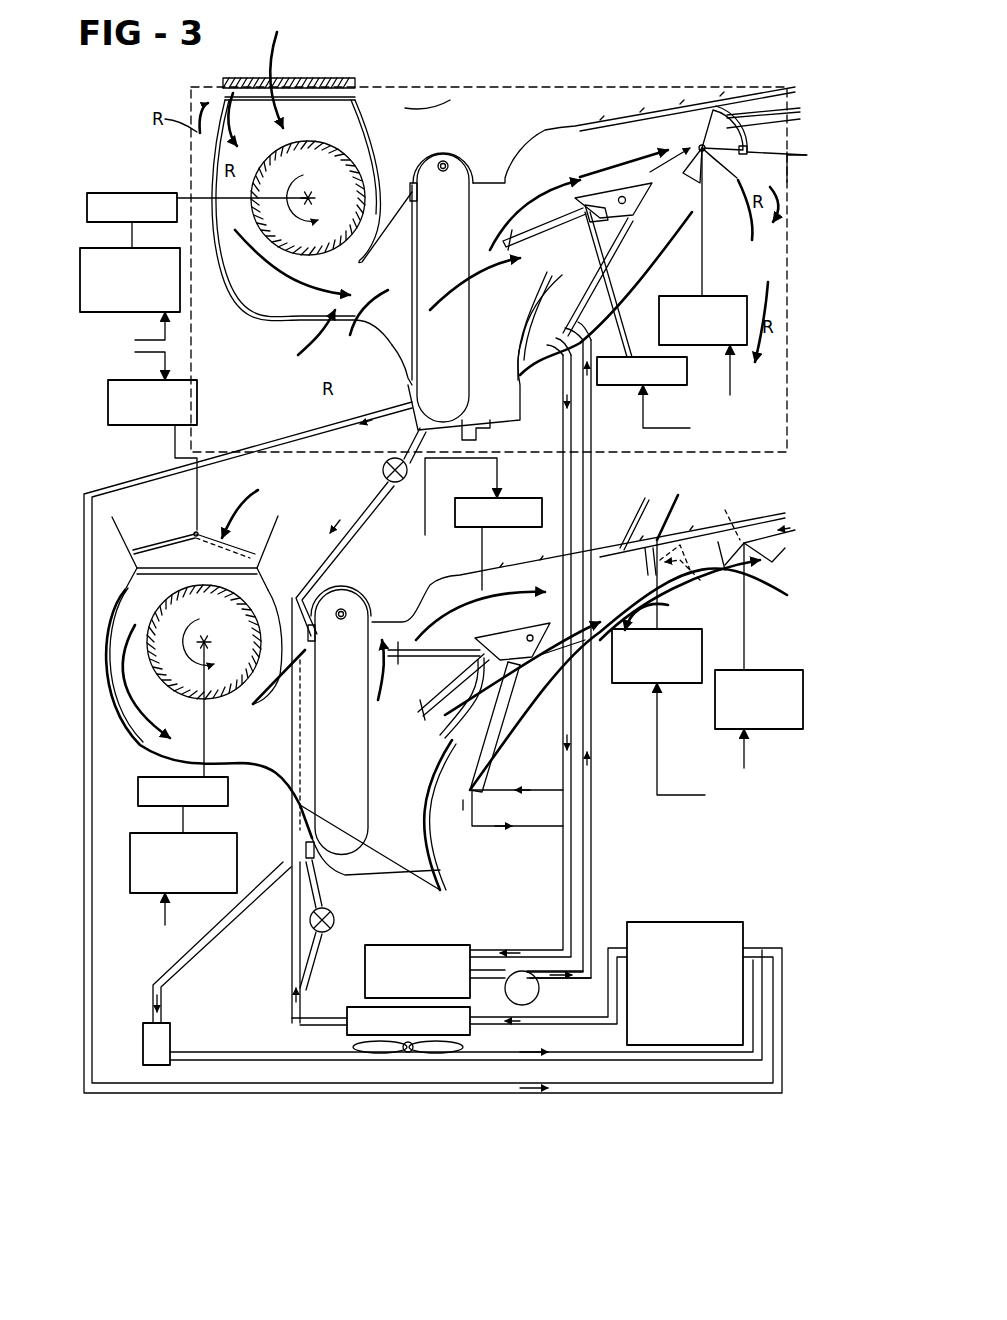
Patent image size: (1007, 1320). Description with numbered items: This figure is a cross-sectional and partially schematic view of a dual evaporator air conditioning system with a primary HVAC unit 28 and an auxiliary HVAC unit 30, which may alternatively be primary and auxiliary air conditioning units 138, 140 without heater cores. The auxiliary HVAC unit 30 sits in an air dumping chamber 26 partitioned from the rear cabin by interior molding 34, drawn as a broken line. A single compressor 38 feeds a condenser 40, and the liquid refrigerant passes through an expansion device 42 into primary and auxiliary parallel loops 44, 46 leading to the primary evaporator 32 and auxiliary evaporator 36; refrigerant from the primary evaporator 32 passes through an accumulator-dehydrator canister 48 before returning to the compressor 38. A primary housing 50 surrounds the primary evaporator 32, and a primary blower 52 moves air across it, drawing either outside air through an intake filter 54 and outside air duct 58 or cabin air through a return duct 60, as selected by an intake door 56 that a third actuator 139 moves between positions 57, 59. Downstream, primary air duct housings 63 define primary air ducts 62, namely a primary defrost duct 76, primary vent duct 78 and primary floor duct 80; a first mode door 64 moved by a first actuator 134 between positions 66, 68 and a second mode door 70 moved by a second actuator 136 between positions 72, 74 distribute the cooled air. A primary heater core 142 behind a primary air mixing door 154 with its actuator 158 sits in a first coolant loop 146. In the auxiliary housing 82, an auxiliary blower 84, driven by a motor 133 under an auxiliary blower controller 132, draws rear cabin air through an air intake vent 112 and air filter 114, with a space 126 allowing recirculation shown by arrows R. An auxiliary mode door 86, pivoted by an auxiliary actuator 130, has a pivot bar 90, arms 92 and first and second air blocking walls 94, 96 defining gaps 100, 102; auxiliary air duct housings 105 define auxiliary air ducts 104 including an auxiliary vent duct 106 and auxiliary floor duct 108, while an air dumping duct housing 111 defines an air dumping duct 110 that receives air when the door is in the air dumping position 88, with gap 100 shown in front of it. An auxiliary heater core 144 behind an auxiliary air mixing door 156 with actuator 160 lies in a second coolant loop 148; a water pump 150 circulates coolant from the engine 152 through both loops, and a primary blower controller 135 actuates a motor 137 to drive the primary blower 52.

The air dumping chamber 26 is at (560, 100).
The primary HVAC unit 28 is at (425, 830).
The auxiliary HVAC unit 30 is at (761, 36).
The primary evaporator 32 is at (334, 721).
The interior molding 34 is at (493, 85).
The auxiliary evaporator 36 is at (432, 278).
The compressor 38 is at (718, 922).
The condenser 40 is at (340, 1033).
The expansion device 42 is at (383, 470).
The primary parallel loop 44 is at (205, 940).
The auxiliary parallel loop 46 is at (80, 560).
The accumulator-dehydrator canister 48 is at (143, 1050).
The primary housing 50 is at (125, 718).
The primary blower 52 is at (133, 625).
The intake filter 54 is at (262, 556).
The intake door 56 is at (135, 532).
The intake door position 57 is at (193, 530).
The outside air duct 58 is at (208, 530).
The intake door position 59 is at (240, 548).
The return duct 60 is at (168, 535).
The primary air ducts 62 is at (756, 481).
The primary air duct housings 63 is at (685, 500).
The first mode door 64 is at (640, 575).
The first position of first mode door 66 is at (635, 535).
The second position of first mode door 68 is at (689, 572).
The second mode door 70 is at (722, 575).
The first position of second mode door 72 is at (740, 560).
The second position of second mode door 74 is at (735, 515).
The primary defrost duct 76 is at (655, 530).
The primary vent duct 78 is at (785, 528).
The primary floor duct 80 is at (787, 575).
The auxiliary housing 82 is at (395, 165).
The auxiliary blower 84 is at (345, 145).
The auxiliary mode door 86 is at (672, 135).
The air dumping position 88 is at (680, 128).
The pivot bar 90 is at (688, 125).
The arms 92 is at (700, 110).
The first air blocking wall 94 is at (650, 238).
The second air blocking wall 96 is at (758, 122).
The first gap 100 is at (755, 167).
The second gap 102 is at (663, 168).
The auxiliary air ducts 104 is at (816, 283).
The auxiliary air duct housings 105 is at (795, 240).
The auxiliary vent duct 106 is at (752, 106).
The auxiliary floor duct 108 is at (760, 137).
The air dumping duct 110 is at (770, 205).
The air dumping duct housing 111 is at (798, 160).
The air intake vent 112 is at (305, 78).
The air filter 114 is at (405, 108).
The space 126 is at (200, 95).
The auxiliary actuator 130 is at (735, 296).
The auxiliary blower controller 132 is at (105, 250).
The motor 133 is at (105, 193).
The first actuator 134 is at (684, 683).
The primary blower controller 135 is at (240, 865).
The second actuator 136 is at (803, 692).
The motor 137 is at (138, 793).
The primary air conditioning unit 138 is at (75, 935).
The third actuator 139 is at (108, 408).
The auxiliary air conditioning unit 140 is at (708, 62).
The primary heater core 142 is at (500, 720).
The auxiliary heater core 144 is at (560, 360).
The first coolant loop 146 is at (540, 800).
The second coolant loop 148 is at (580, 548).
The water pump 150 is at (538, 993).
The engine 152 is at (440, 945).
The primary air mixing door 154 is at (430, 722).
The auxiliary air mixing door 156 is at (560, 225).
The actuator 158 is at (475, 498).
The actuator 160 is at (636, 357).